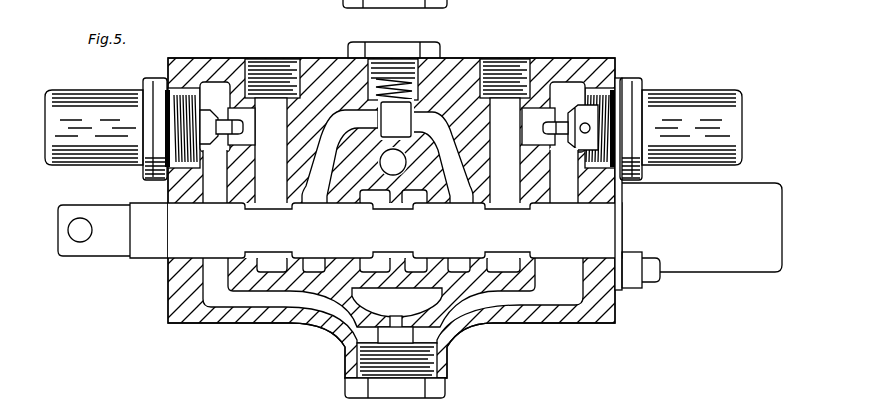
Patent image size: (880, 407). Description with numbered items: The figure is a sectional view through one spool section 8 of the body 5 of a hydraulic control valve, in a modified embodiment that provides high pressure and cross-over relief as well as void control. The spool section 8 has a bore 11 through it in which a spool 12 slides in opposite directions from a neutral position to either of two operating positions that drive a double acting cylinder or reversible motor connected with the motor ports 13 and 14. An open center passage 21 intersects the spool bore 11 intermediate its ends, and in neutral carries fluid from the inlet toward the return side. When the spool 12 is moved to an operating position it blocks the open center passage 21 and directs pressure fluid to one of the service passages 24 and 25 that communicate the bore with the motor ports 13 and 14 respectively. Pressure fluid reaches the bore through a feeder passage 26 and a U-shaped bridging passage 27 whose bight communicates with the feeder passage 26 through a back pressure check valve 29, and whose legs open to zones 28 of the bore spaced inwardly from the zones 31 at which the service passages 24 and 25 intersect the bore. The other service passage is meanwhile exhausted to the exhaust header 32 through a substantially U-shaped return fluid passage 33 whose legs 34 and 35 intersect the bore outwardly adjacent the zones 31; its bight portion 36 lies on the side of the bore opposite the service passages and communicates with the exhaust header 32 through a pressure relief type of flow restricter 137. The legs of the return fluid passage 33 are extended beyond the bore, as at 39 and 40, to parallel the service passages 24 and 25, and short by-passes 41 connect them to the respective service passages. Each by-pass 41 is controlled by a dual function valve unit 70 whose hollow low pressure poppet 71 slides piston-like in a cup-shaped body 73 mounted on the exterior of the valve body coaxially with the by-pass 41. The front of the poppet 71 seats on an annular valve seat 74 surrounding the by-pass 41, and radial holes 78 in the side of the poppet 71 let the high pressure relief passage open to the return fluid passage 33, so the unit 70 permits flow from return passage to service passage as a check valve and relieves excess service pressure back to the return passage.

The body of a hydraulic control valve 5 is at (598, 43).
The spool section 8 is at (553, 58).
The bore 11 is at (172, 252).
The spool 12 is at (182, 240).
The motor port 13 is at (508, 60).
The motor port 14 is at (268, 62).
The open center passage 21 is at (403, 203).
The service passage 24 is at (494, 174).
The service passage 25 is at (260, 174).
The feeder passage 26 is at (385, 172).
The bridging passage 27 is at (352, 133).
The zones of the spool bore 28 is at (323, 262).
The back pressure check valve 29 is at (387, 127).
The zones 31 is at (262, 268).
The exhaust header 32 is at (382, 308).
The return fluid passage 33 is at (478, 305).
The leg of the return fluid passage 34 is at (558, 282).
The leg of the return fluid passage 35 is at (205, 288).
The bight portion of the return fluid passage 36 is at (338, 316).
The extended leg of the return fluid passage 39 is at (557, 184).
The extended leg of the return fluid passage 40 is at (206, 184).
The by-pass 41 is at (245, 113).
The dual function valve unit 70 is at (78, 86).
The low pressure poppet 71 is at (216, 110).
The cup-shaped body 73 is at (70, 150).
The annular valve seat 74 is at (557, 113).
The radial holes 78 is at (593, 129).
The pressure relief type of flow restricter 137 is at (418, 333).